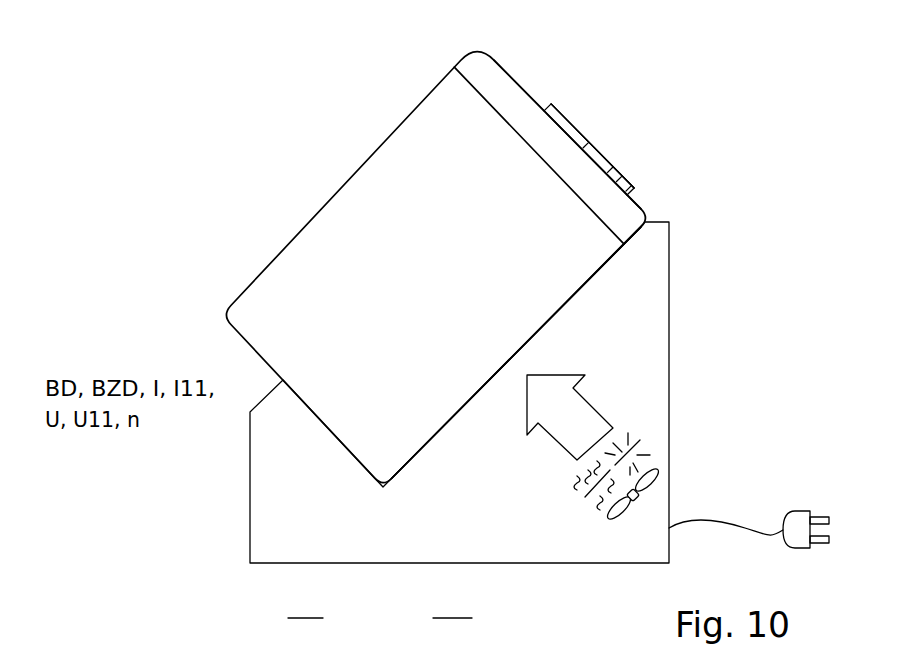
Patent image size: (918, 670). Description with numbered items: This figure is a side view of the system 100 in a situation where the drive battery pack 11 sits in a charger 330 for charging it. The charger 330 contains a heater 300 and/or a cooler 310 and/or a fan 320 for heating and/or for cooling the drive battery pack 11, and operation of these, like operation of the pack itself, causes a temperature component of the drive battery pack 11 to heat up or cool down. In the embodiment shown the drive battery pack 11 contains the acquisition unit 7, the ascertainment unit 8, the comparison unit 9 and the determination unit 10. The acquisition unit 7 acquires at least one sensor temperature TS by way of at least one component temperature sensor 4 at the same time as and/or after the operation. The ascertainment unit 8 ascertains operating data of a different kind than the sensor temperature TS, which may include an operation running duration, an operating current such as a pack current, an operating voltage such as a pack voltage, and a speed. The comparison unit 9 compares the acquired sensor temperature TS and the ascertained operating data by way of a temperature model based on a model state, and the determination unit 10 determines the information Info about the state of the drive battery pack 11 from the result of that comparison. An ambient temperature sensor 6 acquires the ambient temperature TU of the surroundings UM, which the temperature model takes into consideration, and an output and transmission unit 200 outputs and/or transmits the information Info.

The system 100 is at (201, 263).
The drive battery pack 11 is at (508, 73).
The ambient temperature sensor 6 is at (576, 140).
The acquisition unit 7 is at (594, 151).
The ascertainment unit 8 is at (614, 169).
The comparison unit 9 is at (628, 182).
The determination unit 10 is at (634, 193).
The output and transmission unit 200 is at (556, 124).
The information Info is at (585, 148).
The sensor temperature TS is at (563, 280).
The component temperature sensor 4 is at (547, 312).
The heater 300 is at (582, 503).
The cooler 310 is at (641, 440).
The fan 320 is at (657, 489).
The charger 330 is at (250, 503).
The ambient temperature TU is at (305, 607).
The surroundings UM is at (452, 607).